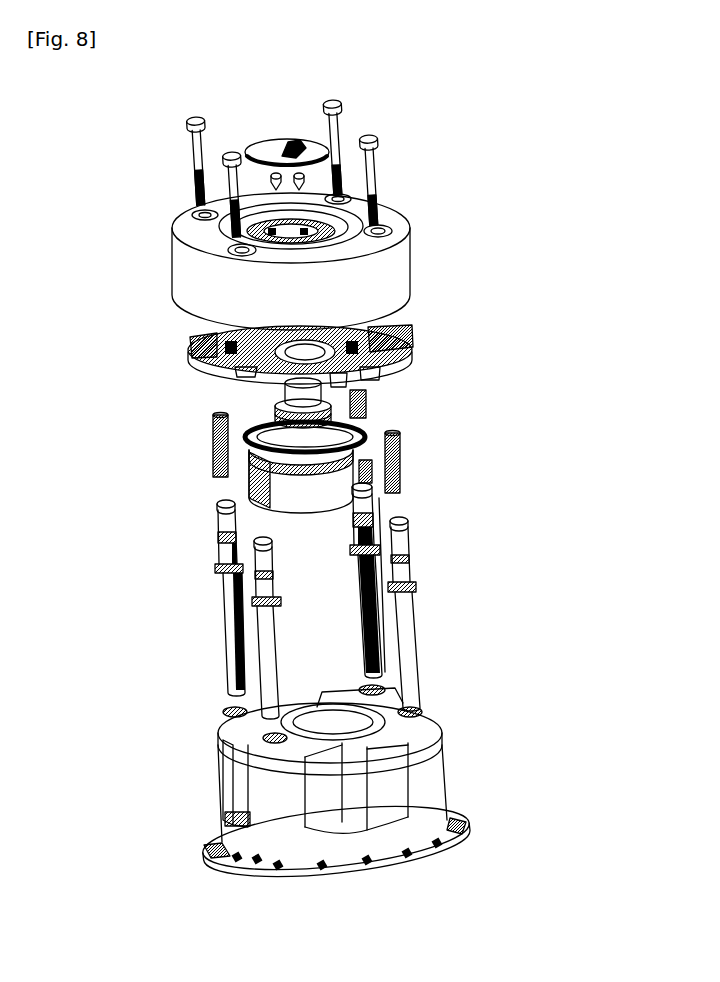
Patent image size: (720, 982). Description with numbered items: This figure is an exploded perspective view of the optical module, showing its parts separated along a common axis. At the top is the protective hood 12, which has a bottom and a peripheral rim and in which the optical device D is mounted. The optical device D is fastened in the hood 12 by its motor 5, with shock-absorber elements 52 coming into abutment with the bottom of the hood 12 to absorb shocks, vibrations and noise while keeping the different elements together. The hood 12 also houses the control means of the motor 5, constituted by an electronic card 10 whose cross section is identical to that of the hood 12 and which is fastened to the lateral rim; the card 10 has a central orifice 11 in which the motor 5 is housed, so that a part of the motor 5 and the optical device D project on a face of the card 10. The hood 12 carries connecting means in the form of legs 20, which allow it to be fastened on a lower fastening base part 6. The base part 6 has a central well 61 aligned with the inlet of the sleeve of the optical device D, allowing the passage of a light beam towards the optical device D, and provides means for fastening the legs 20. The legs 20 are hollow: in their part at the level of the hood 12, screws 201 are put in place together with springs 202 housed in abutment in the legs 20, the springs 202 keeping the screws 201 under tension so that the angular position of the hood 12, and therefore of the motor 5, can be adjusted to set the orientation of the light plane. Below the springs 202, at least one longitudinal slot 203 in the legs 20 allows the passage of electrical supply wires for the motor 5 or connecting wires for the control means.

The screws 201 is at (196, 151).
The protective hood 12 is at (398, 268).
The central orifice 11 is at (385, 330).
The electronic card 10 is at (195, 360).
The shock-absorber elements 52 is at (285, 397).
The motor 5 is at (388, 446).
The optical device D is at (333, 476).
The springs 202 is at (212, 455).
The longitudinal slot 203 is at (238, 606).
The legs 20 is at (413, 630).
The central well 61 is at (420, 716).
The fastening base part 6 is at (386, 786).